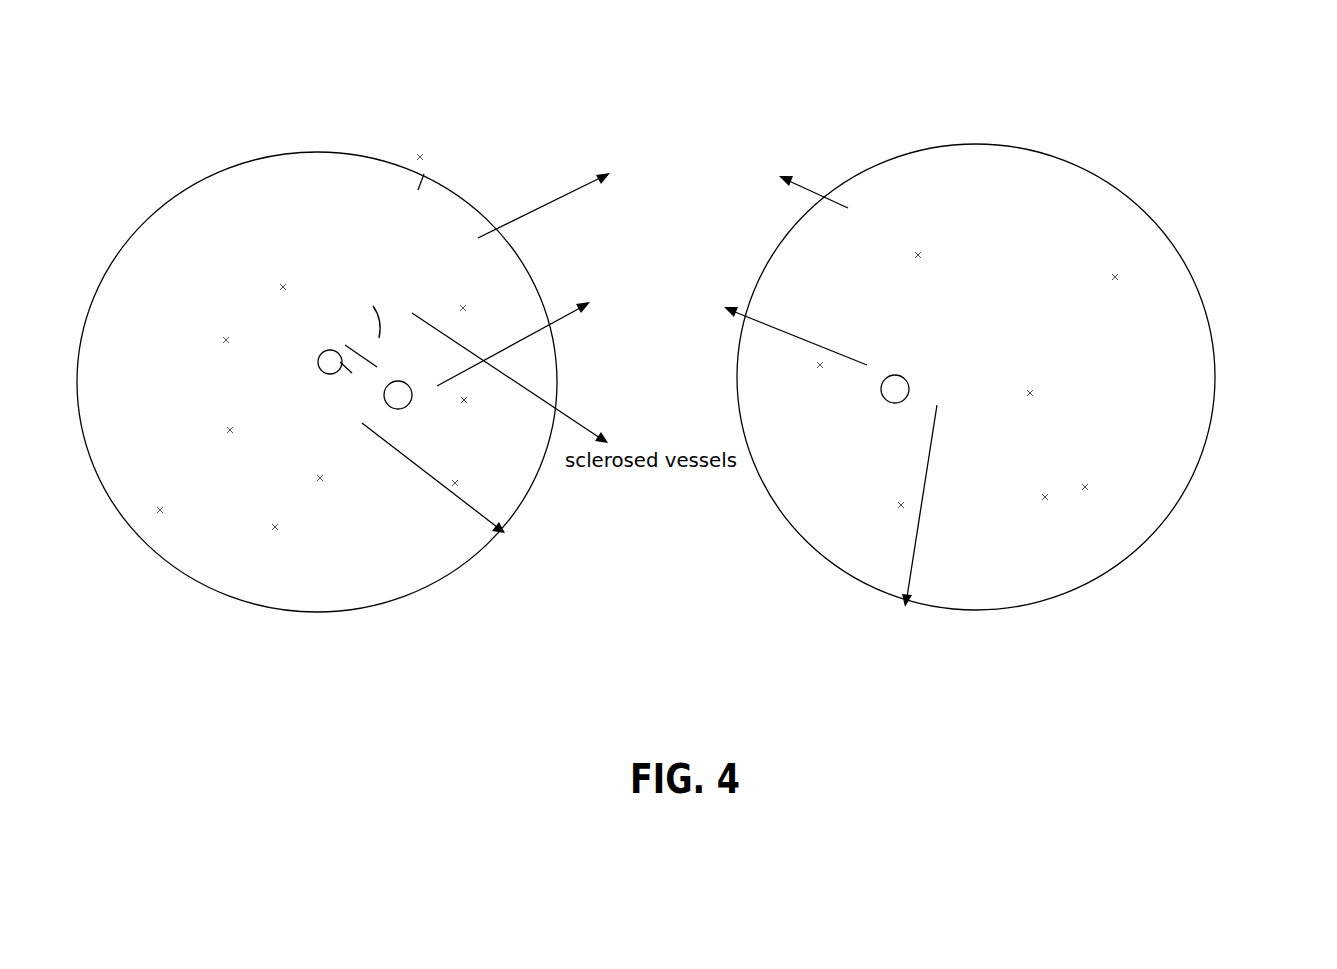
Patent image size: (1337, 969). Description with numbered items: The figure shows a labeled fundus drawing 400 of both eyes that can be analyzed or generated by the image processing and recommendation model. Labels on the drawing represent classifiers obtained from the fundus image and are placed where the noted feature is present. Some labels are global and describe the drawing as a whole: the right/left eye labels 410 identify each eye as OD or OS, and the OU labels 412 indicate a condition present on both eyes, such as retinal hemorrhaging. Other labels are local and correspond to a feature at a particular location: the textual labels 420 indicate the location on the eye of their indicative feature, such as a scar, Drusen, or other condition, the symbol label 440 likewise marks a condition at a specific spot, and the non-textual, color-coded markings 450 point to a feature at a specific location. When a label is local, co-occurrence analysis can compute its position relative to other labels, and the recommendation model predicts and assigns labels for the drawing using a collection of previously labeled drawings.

The labeled fundus drawing 400 is at (703, 360).
The right/left eye label 410 is at (338, 44).
The OU label 412 is at (578, 648).
The textual label 420 is at (678, 157).
The symbol label 440 is at (566, 306).
The color-coded marking 450 is at (1090, 484).